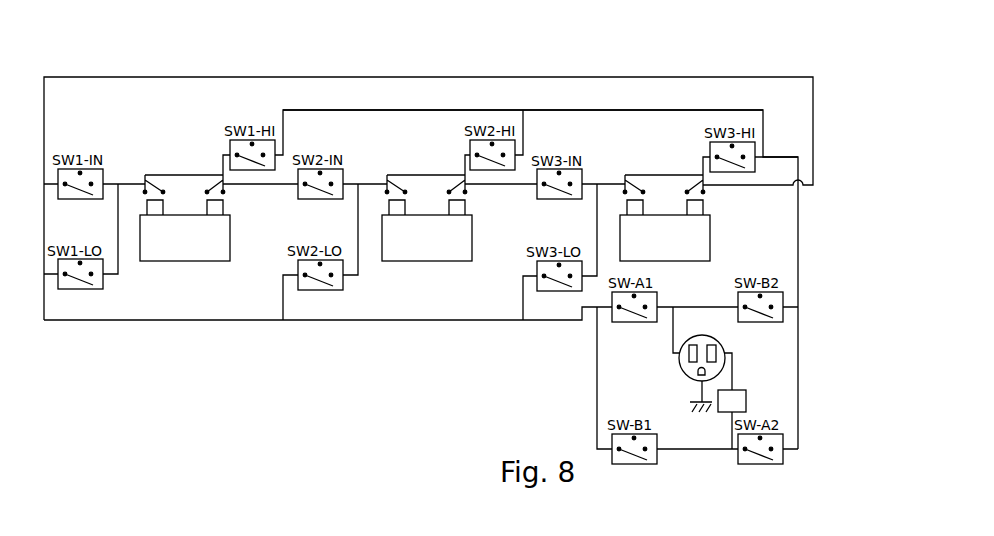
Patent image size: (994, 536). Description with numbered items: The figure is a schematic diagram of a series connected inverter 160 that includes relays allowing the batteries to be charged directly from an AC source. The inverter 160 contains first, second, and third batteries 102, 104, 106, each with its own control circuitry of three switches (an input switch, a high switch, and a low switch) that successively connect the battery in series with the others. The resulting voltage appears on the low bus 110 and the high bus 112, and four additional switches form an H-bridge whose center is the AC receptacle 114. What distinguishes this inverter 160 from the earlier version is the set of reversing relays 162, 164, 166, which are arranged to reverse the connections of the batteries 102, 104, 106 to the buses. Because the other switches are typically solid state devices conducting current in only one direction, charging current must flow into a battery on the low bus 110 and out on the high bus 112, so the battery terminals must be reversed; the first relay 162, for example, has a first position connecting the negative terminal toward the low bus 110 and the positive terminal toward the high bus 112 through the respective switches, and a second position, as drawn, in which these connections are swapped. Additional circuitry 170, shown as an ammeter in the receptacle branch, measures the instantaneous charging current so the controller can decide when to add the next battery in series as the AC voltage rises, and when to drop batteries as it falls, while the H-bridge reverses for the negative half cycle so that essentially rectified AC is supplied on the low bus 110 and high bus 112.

The first battery 102 is at (177, 262).
The second battery 104 is at (404, 262).
The third battery 106 is at (677, 262).
The low bus wire 110 is at (478, 322).
The high bus wire 112 is at (587, 112).
The AC receptacle 114 is at (684, 373).
The series connected inverter 160 is at (278, 384).
The reversing relay 162 is at (171, 159).
The reversing relay 164 is at (419, 162).
The reversing relay 166 is at (659, 168).
The additional circuitry 170 is at (746, 400).